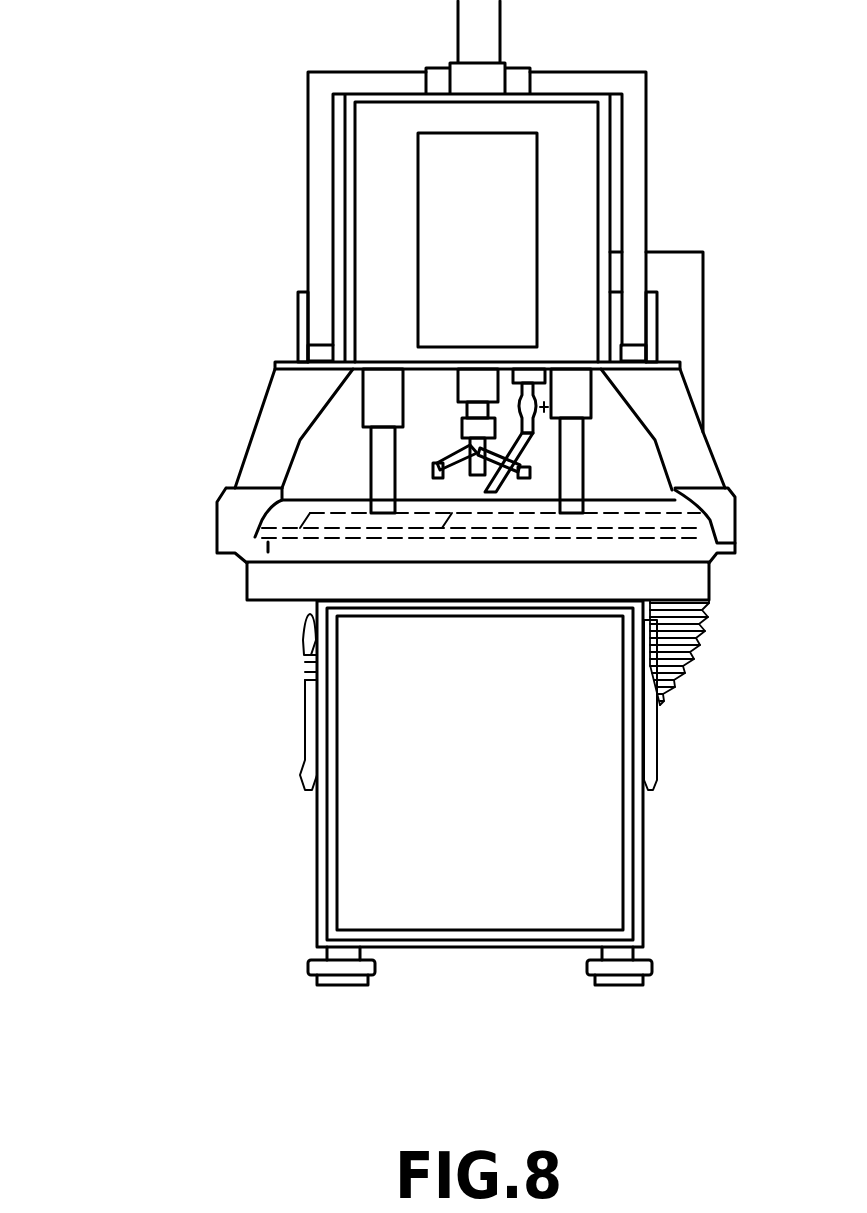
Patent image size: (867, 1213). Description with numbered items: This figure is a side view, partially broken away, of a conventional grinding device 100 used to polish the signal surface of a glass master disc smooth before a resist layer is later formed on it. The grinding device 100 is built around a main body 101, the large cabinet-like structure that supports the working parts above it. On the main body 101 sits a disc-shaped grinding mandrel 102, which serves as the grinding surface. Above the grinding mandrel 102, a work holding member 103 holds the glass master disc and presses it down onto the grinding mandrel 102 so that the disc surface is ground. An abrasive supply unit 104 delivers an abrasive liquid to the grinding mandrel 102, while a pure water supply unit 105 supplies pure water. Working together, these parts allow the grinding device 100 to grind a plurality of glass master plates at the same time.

The grinding device 100 is at (168, 137).
The main body 101 is at (383, 837).
The grinding mandrel 102 is at (357, 547).
The work holding member 103 is at (383, 404).
The abrasive supply unit 104 is at (476, 472).
The pure water supply unit 105 is at (443, 478).